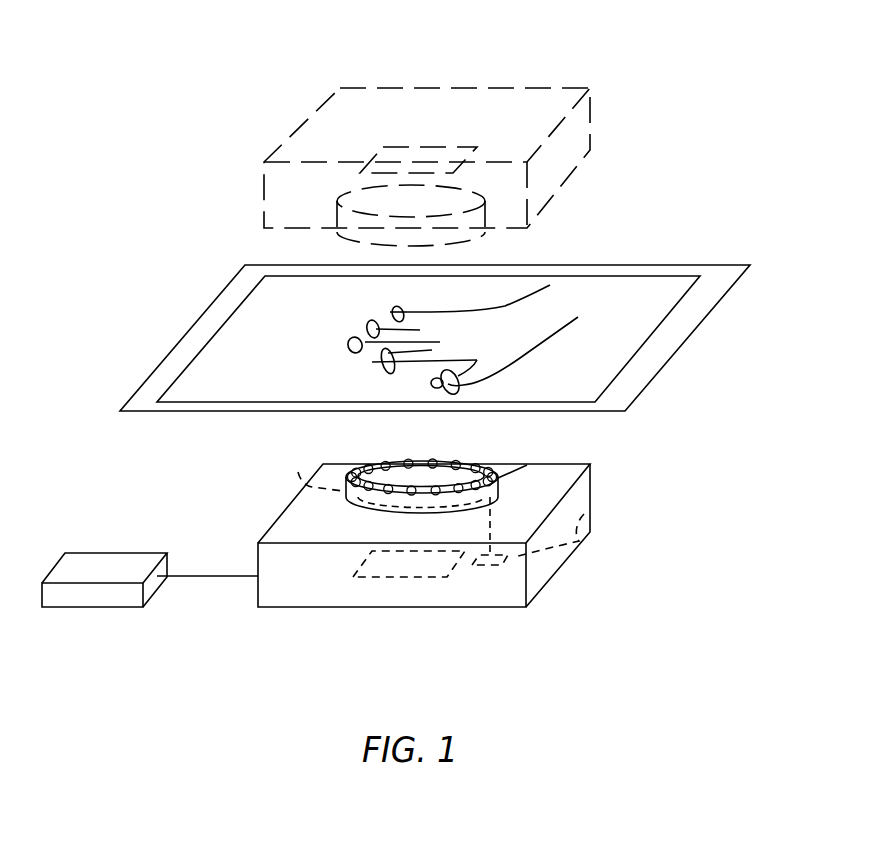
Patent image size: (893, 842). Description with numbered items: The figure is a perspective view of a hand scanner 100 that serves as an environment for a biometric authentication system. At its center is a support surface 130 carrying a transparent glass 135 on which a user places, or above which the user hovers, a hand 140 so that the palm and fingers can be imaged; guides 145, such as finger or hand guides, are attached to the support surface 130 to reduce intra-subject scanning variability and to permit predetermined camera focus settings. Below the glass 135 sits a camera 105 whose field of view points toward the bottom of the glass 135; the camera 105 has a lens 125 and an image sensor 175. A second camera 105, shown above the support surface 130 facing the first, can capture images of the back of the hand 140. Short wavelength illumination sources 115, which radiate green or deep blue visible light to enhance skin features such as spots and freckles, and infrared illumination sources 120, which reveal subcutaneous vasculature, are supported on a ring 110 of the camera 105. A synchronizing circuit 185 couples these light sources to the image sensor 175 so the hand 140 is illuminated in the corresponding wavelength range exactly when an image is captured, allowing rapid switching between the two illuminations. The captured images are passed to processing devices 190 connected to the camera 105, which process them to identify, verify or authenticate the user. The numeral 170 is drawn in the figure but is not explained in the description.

The hand scanner 100 is at (199, 63).
The camera 105 is at (394, 83).
The ring 110 is at (527, 465).
The illumination sources 115 is at (453, 462).
The infrared illumination sources 120 is at (378, 465).
The lens 125 is at (297, 471).
The support surface 130 is at (715, 265).
The glass 135 is at (605, 283).
The hand 140 is at (522, 355).
The guides 145 is at (397, 311).
The finger marker 170 is at (349, 345).
The image sensor 175 is at (351, 553).
The synchronizing circuit 185 is at (588, 512).
The processing devices 190 is at (88, 553).